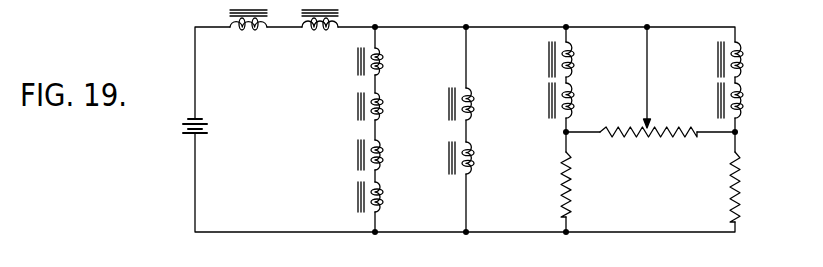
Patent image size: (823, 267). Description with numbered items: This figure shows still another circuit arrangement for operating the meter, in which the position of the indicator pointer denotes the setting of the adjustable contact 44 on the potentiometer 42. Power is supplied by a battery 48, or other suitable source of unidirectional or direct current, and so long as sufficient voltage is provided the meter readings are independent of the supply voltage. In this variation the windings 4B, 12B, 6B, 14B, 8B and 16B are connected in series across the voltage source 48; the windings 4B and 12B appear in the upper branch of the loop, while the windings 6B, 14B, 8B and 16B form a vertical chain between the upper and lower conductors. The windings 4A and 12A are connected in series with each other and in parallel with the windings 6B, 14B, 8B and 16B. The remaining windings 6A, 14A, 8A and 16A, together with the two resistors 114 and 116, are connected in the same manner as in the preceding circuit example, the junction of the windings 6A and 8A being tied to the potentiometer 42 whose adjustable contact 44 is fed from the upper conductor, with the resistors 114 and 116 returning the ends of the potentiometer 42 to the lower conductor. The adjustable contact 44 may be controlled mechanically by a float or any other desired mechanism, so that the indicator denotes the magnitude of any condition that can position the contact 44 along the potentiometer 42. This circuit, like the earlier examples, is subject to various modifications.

The winding 4B is at (245, 34).
The winding 12B is at (316, 34).
The winding 6B is at (386, 66).
The winding 14B is at (386, 103).
The winding 8B is at (386, 153).
The winding 16B is at (386, 194).
The winding 4A is at (477, 105).
The winding 12A is at (476, 157).
The winding 6A is at (575, 61).
The winding 14A is at (575, 98).
The winding 8A is at (744, 62).
The winding 16A is at (743, 100).
The battery 48 is at (208, 130).
The adjustable contact 44 is at (651, 128).
The potentiometer 42 is at (642, 139).
The resistor 114 is at (577, 182).
The resistor 116 is at (743, 193).